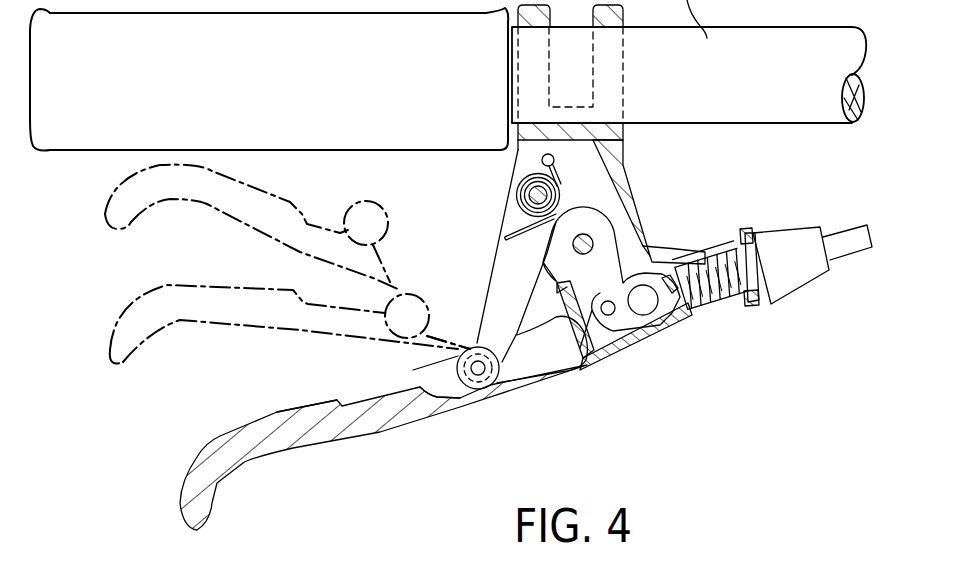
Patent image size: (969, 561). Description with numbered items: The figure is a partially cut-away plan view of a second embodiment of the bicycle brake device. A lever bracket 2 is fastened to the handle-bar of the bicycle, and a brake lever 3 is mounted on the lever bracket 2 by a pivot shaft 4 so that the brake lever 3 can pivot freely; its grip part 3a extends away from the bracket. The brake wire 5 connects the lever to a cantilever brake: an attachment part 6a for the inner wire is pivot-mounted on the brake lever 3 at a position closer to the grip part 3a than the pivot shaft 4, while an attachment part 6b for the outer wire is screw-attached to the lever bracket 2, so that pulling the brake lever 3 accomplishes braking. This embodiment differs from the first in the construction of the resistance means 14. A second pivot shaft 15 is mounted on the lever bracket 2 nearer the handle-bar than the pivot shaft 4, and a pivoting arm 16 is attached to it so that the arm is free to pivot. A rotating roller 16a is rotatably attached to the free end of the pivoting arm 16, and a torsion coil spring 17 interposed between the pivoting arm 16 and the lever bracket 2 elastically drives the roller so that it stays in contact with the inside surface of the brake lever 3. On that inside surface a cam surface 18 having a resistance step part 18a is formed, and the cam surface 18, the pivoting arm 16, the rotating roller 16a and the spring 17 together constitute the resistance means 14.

The lever bracket 2 is at (613, 363).
The brake lever 3 is at (360, 442).
The grip part 3a is at (297, 440).
The pivot shaft 4 is at (594, 240).
The brake wire 5 is at (857, 253).
The attachment part for the inner wire 6a is at (670, 323).
The attachment part for the outer wire 6b is at (785, 268).
The resistance means 14 is at (452, 337).
The pivot shaft 15 is at (520, 192).
The pivoting arm 16 is at (508, 290).
The rotating roller 16a is at (504, 367).
The torsion coil spring 17 is at (556, 170).
The cam surface 18 is at (415, 369).
The resistance step part 18a is at (450, 400).